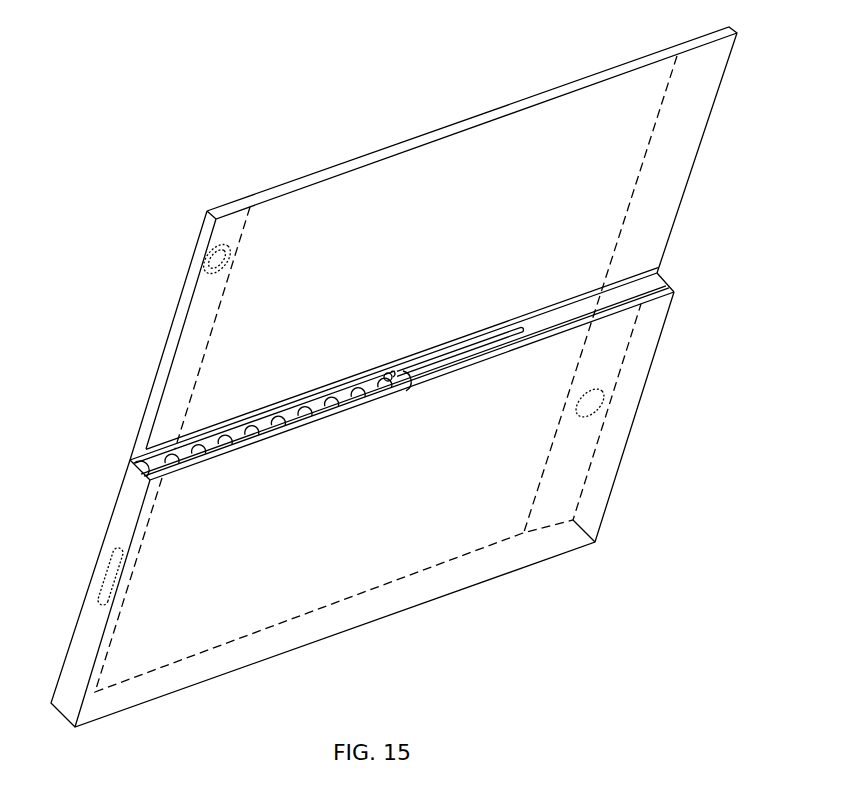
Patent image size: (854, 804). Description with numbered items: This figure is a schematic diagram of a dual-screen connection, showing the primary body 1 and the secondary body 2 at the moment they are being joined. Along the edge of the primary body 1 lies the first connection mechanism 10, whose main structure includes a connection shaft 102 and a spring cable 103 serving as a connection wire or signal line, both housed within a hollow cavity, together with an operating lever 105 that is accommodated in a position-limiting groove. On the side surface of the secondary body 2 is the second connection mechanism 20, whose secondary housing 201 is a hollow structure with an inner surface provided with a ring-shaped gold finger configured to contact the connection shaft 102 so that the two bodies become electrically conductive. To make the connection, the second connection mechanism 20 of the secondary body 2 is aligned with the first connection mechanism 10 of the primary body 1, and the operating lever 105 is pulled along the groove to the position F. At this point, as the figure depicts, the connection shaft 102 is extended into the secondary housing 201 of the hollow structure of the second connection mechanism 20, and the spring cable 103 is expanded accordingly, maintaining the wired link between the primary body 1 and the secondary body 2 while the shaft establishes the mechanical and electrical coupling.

The primary body 1 is at (102, 604).
The secondary body 2 is at (430, 172).
The first connection mechanism 10 is at (220, 430).
The second connection mechanism 20 is at (655, 292).
The secondary housing 201 is at (580, 322).
The connection shaft 102 is at (490, 343).
The spring cable 103 is at (330, 397).
The operating lever 105 is at (387, 371).
The position F is at (388, 350).